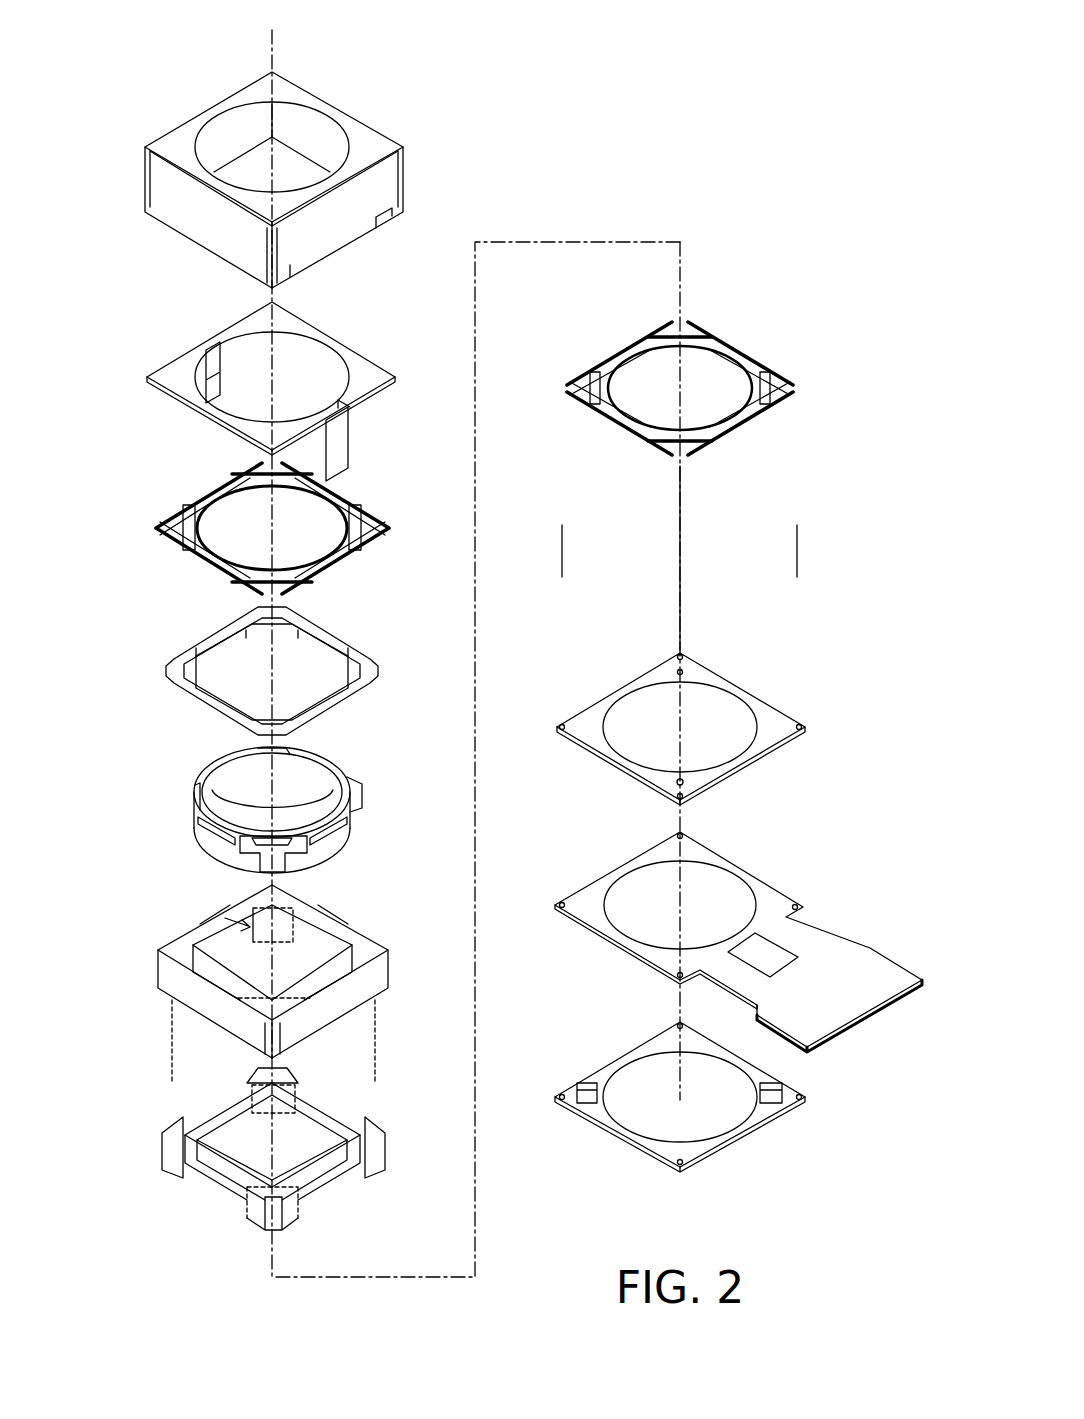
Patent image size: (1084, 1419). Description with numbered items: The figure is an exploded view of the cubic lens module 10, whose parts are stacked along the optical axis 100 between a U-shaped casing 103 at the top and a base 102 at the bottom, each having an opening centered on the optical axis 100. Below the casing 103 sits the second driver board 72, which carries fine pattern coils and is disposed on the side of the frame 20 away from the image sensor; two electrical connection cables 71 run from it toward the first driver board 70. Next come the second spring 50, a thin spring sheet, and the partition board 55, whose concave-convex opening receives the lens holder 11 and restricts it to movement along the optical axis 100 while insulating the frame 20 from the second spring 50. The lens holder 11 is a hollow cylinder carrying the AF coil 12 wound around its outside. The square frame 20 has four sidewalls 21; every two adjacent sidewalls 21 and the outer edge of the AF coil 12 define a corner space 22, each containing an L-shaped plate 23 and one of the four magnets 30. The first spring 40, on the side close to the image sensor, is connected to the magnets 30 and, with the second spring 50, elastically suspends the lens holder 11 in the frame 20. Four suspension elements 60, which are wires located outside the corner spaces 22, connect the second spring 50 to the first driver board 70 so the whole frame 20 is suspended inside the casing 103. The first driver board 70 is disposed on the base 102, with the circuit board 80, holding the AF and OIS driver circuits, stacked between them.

The lens module 10 is at (663, 120).
The optical axis 100 is at (462, 638).
The base 102 is at (605, 1080).
The casing 103 is at (250, 141).
The lens holder 11 is at (200, 790).
The AF coil 12 is at (215, 1190).
The frame 20 is at (175, 955).
The sidewalls 21 is at (220, 936).
The corner space 22 is at (225, 918).
The L-shaped plate 23 is at (288, 925).
The magnets 30 is at (285, 1076).
The first spring 40 is at (735, 352).
The second spring 50 is at (190, 508).
The partition board 55 is at (188, 665).
The suspension elements 60 is at (683, 482).
The first driver board 70 is at (775, 722).
The electrical connection cables 71 is at (212, 365).
The second driver board 72 is at (175, 372).
The circuit board 80 is at (775, 897).